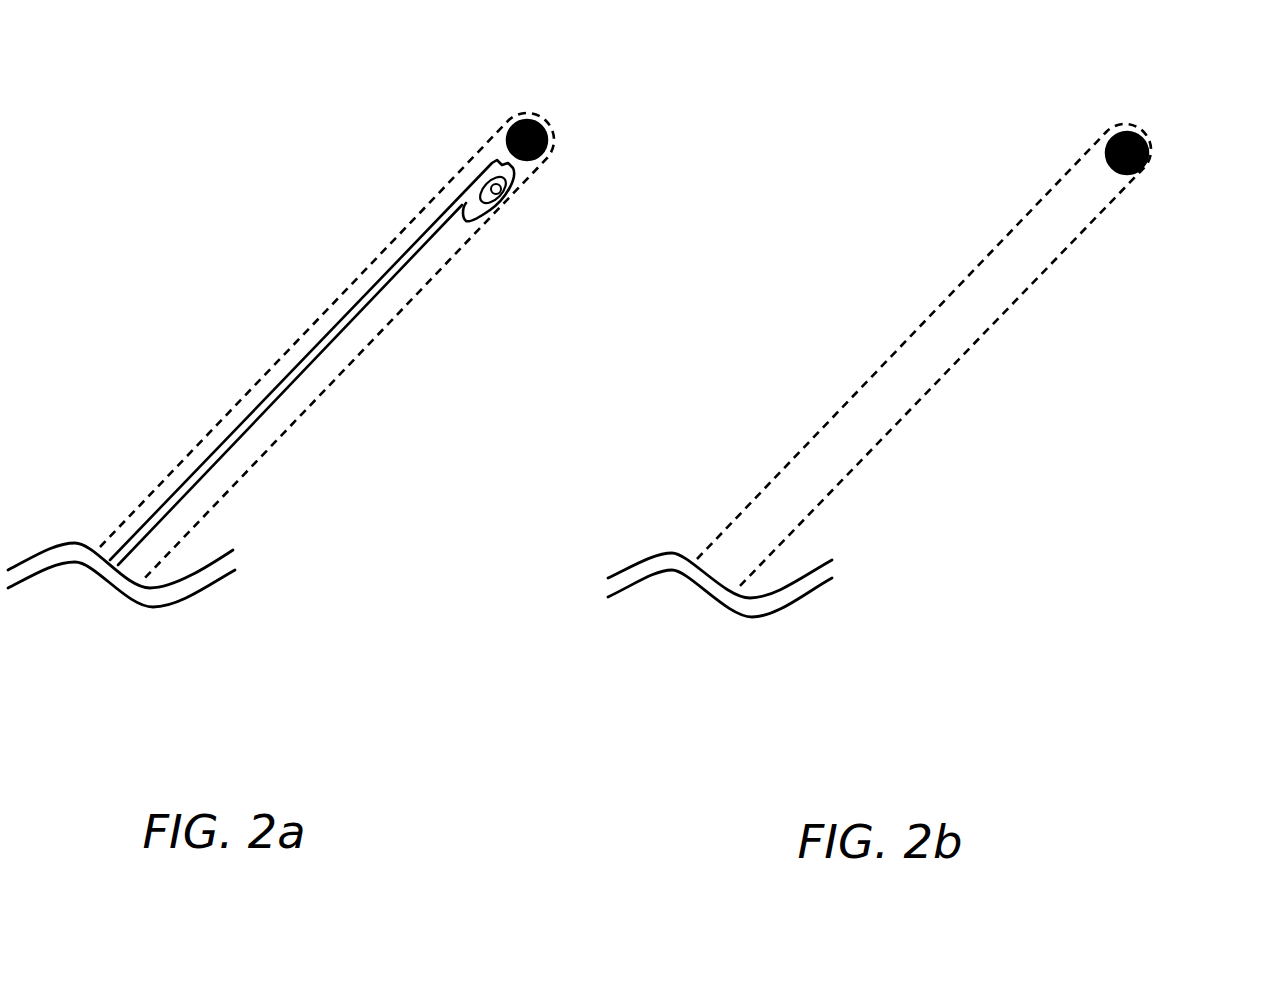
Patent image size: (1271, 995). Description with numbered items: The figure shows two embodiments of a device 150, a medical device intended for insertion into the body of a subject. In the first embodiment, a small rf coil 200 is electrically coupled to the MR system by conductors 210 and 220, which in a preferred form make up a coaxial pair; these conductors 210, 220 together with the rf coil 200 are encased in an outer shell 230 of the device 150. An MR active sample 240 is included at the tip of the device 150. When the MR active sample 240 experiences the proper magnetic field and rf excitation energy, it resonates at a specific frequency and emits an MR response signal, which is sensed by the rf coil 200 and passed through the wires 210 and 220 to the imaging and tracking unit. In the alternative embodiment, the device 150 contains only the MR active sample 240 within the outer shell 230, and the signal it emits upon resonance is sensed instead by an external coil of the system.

In FIG. 2A, the device 150 is at (403, 72).
In FIG. 2B, the device 150 is at (1027, 75).
In FIG. 2A, the rf coil 200 is at (502, 192).
In FIG. 2A, the conductor 210 is at (288, 387).
In FIG. 2A, the conductor 220 is at (265, 397).
In FIG. 2A, the outer shell 230 is at (408, 302).
In FIG. 2B, the outer shell 230 is at (1007, 308).
In FIG. 2A, the MR active sample 240 is at (550, 113).
In FIG. 2B, the MR active sample 240 is at (1142, 133).